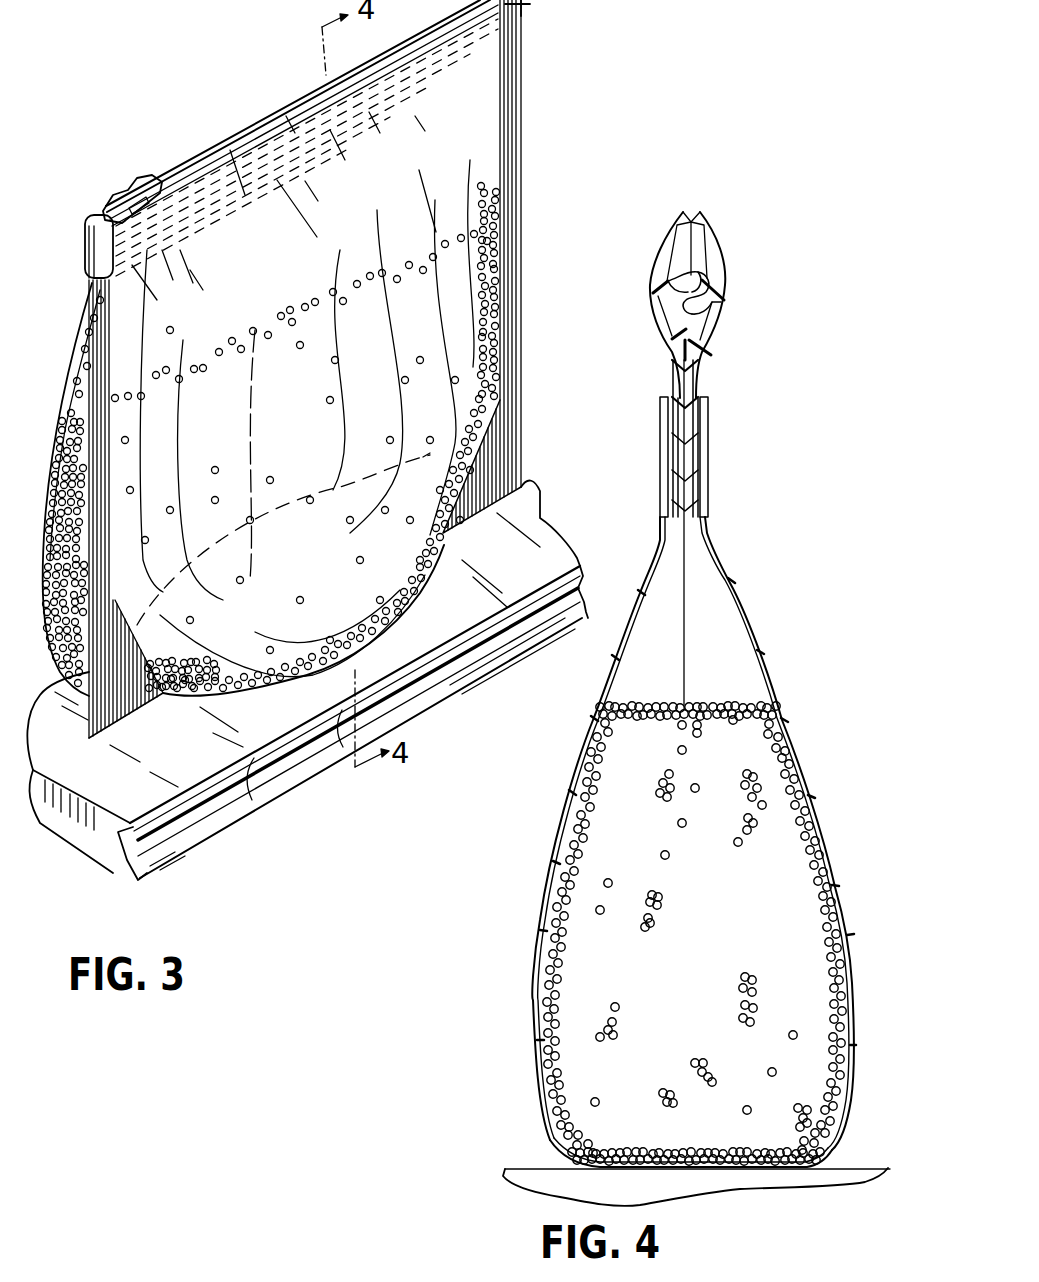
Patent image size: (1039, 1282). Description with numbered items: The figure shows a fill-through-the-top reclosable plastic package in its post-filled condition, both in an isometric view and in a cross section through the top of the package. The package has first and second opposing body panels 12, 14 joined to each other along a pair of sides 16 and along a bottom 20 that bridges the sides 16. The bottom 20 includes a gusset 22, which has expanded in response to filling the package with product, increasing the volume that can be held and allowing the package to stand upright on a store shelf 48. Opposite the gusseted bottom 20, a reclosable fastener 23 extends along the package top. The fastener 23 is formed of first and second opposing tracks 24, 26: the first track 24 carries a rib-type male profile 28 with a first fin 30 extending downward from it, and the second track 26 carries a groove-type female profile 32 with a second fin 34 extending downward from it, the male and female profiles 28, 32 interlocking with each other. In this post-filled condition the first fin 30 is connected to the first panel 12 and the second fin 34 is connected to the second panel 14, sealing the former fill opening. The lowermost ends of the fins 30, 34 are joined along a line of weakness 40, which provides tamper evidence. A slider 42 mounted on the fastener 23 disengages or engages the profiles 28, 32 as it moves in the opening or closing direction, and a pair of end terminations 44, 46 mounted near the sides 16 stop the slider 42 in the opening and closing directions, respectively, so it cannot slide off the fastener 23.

In FIG. 3, the first body panel 12 is at (57, 516).
In FIG. 4, the first body panel 12 is at (590, 739).
In FIG. 3, the second body panel 14 is at (155, 295).
In FIG. 4, the second body panel 14 is at (797, 736).
In FIG. 3, the sides 16 is at (506, 192).
In FIG. 3, the bottom 20 is at (453, 560).
In FIG. 4, the bottom 20 is at (736, 1172).
In FIG. 3, the gusset 22 is at (190, 692).
In FIG. 4, the gusset 22 is at (673, 1168).
In FIG. 3, the reclosable fastener 23 is at (257, 123).
In FIG. 4, the reclosable fastener 23 is at (721, 231).
In FIG. 4, the first track 24 is at (646, 313).
In FIG. 4, the second track 26 is at (735, 317).
In FIG. 4, the male profile 28 is at (655, 291).
In FIG. 4, the first fin 30 is at (667, 421).
In FIG. 4, the female profile 32 is at (701, 283).
In FIG. 4, the second fin 34 is at (694, 422).
In FIG. 4, the line of weakness 40 is at (703, 516).
In FIG. 3, the slider 42 is at (149, 178).
In FIG. 3, the end termination 44 is at (98, 218).
In FIG. 3, the end termination 46 is at (534, 17).
In FIG. 3, the store shelf 48 is at (112, 862).
In FIG. 4, the store shelf 48 is at (524, 1179).